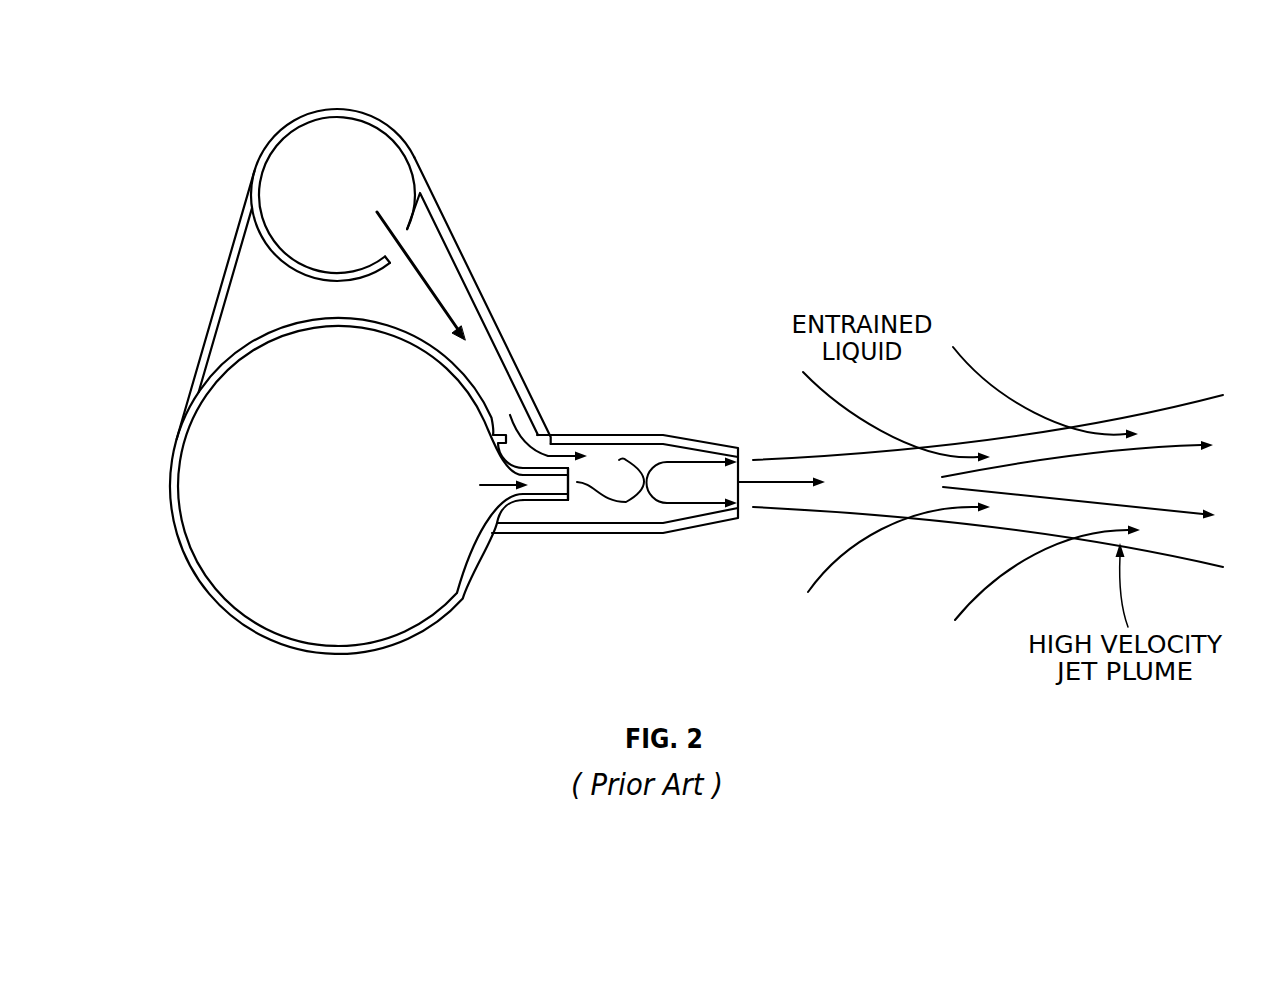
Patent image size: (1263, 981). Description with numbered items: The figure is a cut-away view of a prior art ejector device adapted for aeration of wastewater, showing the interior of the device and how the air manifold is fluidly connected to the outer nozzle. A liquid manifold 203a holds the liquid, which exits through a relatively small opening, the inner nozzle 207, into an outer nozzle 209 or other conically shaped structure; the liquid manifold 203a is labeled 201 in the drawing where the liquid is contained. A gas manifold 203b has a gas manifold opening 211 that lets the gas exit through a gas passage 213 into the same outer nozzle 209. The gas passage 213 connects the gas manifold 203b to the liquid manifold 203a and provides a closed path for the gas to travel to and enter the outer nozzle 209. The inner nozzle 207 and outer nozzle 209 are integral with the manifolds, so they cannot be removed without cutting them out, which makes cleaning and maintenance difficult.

The liquid reservoir 201 is at (333, 655).
The liquid manifold 203a is at (170, 488).
The gas manifold 203b is at (334, 108).
The inner nozzle 207 is at (542, 502).
The outer nozzle 209 is at (698, 527).
The gas manifold opening 211 is at (418, 270).
The gas passage 213 is at (502, 333).